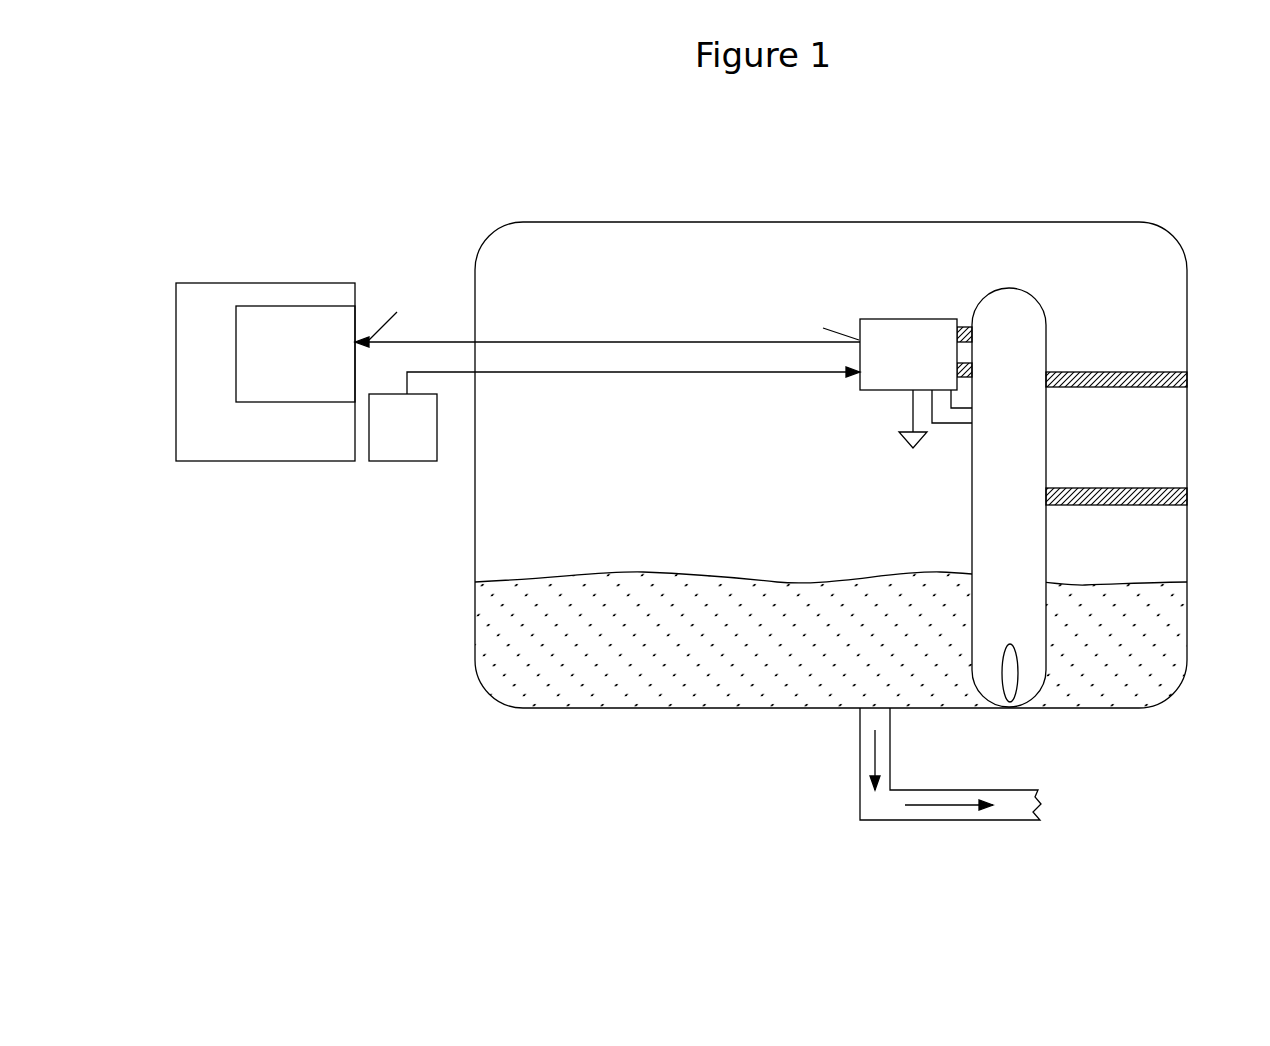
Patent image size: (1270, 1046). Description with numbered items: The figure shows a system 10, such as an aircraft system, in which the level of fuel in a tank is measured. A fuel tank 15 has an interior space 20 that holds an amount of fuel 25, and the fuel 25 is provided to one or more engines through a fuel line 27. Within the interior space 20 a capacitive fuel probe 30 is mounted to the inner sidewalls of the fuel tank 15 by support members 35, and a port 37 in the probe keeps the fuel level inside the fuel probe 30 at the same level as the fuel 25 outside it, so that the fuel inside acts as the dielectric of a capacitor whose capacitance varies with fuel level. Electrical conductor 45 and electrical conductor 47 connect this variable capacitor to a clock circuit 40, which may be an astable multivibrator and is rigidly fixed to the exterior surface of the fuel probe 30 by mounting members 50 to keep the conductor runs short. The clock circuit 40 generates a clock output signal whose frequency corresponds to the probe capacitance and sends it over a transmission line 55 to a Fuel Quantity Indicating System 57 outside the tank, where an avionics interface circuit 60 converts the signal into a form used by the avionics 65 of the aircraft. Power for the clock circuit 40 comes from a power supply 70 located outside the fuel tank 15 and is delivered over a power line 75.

The system 10 is at (410, 165).
The fuel tank 15 is at (625, 220).
The interior space 20 is at (769, 448).
The fuel 25 is at (737, 598).
The fuel line 27 is at (975, 790).
The capacitive fuel probe 30 is at (1009, 497).
The support members 35 is at (1138, 371).
The port 37 is at (1010, 672).
The clock circuit 40 is at (908, 383).
The electrical conductor 45 is at (965, 410).
The electrical conductor 47 is at (936, 425).
The mounting members 50 is at (962, 327).
The transmission line 55 is at (593, 342).
The Fuel Quantity Indicating System 57 is at (265, 336).
The avionics interface circuit 60 is at (295, 354).
The avionics 65 is at (265, 372).
The power supply 70 is at (403, 427).
The power line 75 is at (678, 372).